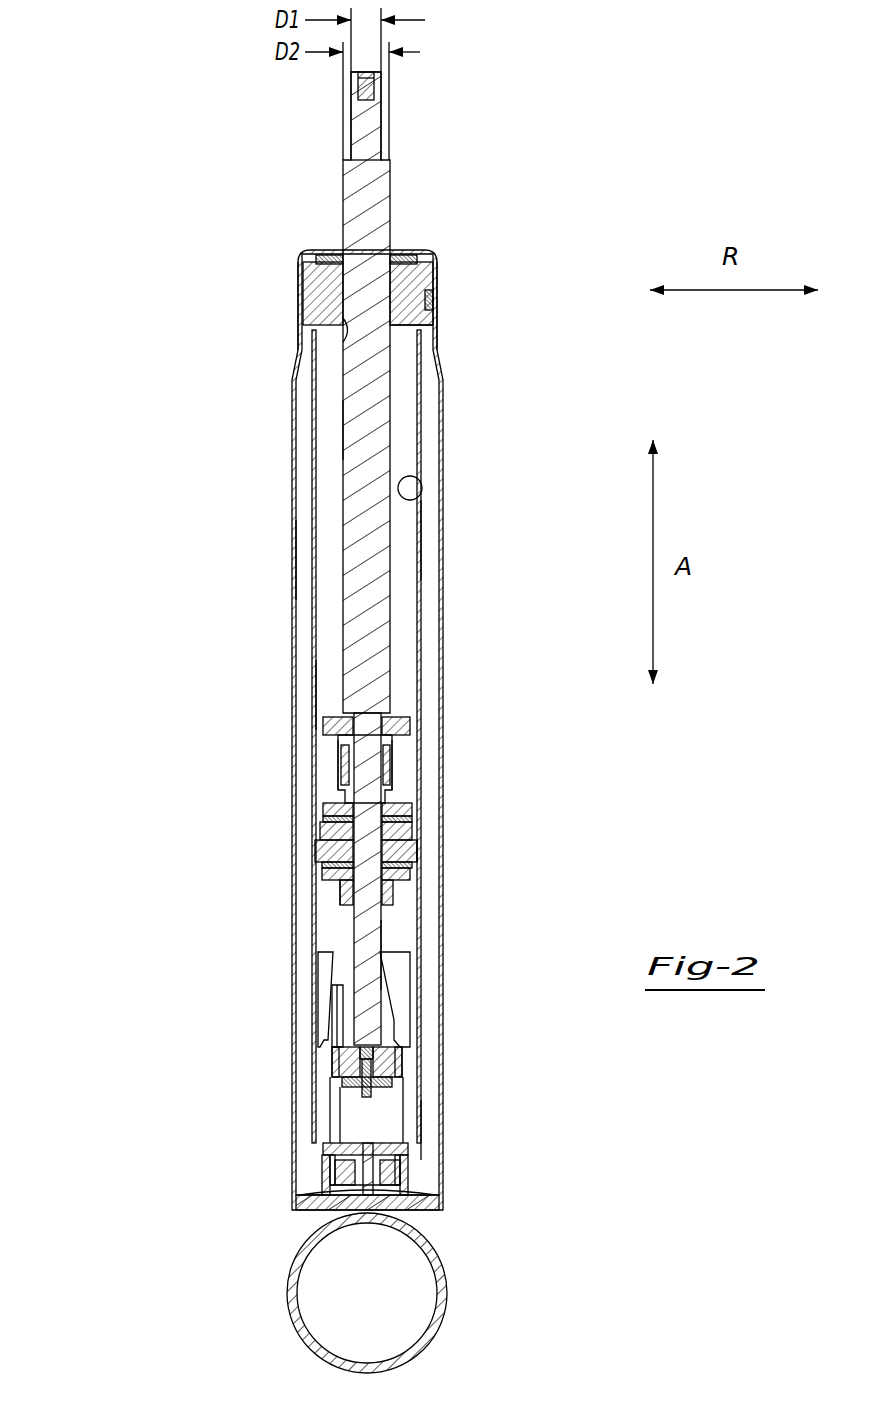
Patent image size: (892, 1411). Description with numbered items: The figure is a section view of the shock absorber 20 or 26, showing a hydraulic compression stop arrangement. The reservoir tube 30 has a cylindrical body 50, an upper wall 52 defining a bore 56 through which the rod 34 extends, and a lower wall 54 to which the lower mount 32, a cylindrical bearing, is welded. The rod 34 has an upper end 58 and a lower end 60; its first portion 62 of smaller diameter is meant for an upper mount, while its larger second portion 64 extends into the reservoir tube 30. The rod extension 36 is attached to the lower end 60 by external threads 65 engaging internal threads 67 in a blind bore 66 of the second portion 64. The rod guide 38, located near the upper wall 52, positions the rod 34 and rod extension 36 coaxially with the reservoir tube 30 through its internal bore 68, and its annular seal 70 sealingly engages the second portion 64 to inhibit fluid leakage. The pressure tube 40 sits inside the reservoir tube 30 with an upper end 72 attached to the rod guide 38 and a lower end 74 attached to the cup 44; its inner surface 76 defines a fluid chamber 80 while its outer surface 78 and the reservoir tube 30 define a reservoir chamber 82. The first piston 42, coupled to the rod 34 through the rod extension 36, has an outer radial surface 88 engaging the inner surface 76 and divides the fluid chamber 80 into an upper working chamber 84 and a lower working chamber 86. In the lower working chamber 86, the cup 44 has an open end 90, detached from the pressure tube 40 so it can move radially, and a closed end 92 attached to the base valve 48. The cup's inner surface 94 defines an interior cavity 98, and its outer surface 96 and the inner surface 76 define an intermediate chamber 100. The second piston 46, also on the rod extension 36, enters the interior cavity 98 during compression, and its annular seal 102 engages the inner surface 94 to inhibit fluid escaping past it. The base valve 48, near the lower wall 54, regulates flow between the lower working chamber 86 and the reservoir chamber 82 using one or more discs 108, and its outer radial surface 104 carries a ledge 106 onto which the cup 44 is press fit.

The shock absorber 20 is at (292, 633).
The shock absorber 26 is at (168, 112).
The reservoir tube 30 is at (290, 325).
The lower mount 32 is at (300, 1258).
The rod 34 is at (398, 182).
The rod extension 36 is at (378, 932).
The rod guide 38 is at (438, 270).
The pressure tube 40 is at (425, 635).
The first piston 42 is at (325, 803).
The cup 44 is at (412, 1018).
The second piston 46 is at (325, 1045).
The base valve 48 is at (320, 1175).
The cylindrical body 50 is at (292, 640).
The upper wall 52 is at (318, 258).
The lower wall 54 is at (315, 1223).
The bore 56 is at (327, 255).
The upper end 58 is at (378, 74).
The lower end 60 is at (382, 760).
The first portion 62 is at (356, 135).
The second portion 64 is at (360, 428).
The external threads 65 is at (350, 745).
The blind bore 66 is at (395, 735).
The internal threads 67 is at (392, 758).
The internal bore 68 is at (430, 300).
The annular seal 70 is at (340, 330).
The upper end 72 is at (425, 330).
The lower end 74 is at (445, 1135).
The inner surface 76 is at (422, 488).
The outer surface 78 is at (425, 540).
The fluid chamber 80 is at (315, 510).
The reservoir chamber 82 is at (300, 575).
The upper working chamber 84 is at (328, 695).
The lower working chamber 86 is at (332, 905).
The outer radial surface 88 is at (418, 845).
The open end 90 is at (382, 955).
The closed end 92 is at (333, 1135).
The inner surface 94 is at (340, 1090).
The outer surface 96 is at (405, 1083).
The interior cavity 98 is at (385, 1100).
The intermediate chamber 100 is at (335, 1068).
The annular seal 102 is at (408, 1062).
The outer radial surface 104 is at (405, 1185).
The ledge 106 is at (330, 1152).
The discs 108 is at (400, 1160).